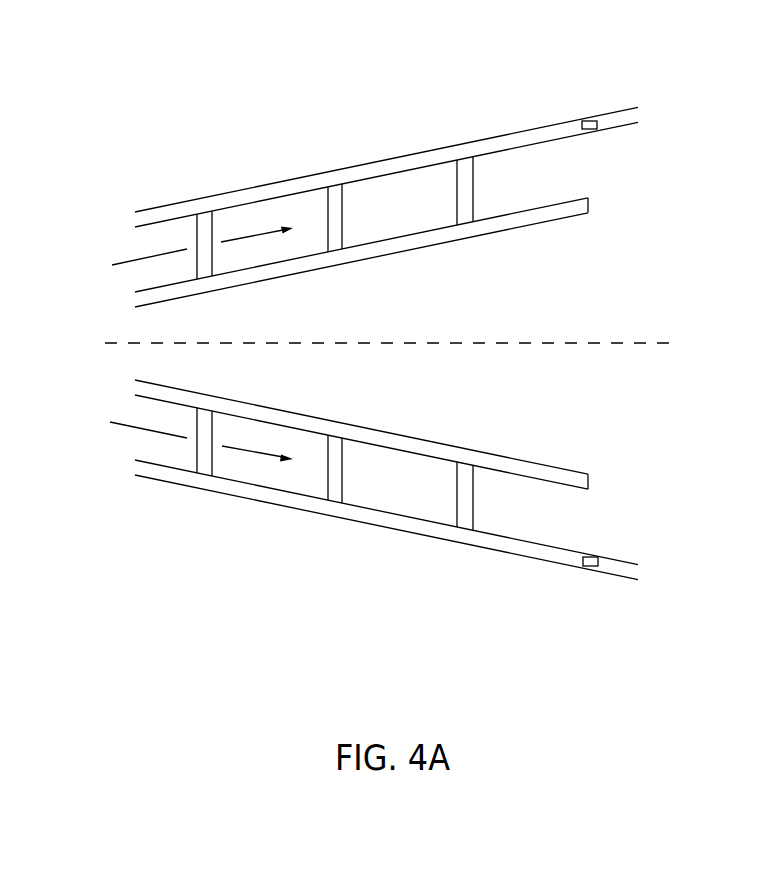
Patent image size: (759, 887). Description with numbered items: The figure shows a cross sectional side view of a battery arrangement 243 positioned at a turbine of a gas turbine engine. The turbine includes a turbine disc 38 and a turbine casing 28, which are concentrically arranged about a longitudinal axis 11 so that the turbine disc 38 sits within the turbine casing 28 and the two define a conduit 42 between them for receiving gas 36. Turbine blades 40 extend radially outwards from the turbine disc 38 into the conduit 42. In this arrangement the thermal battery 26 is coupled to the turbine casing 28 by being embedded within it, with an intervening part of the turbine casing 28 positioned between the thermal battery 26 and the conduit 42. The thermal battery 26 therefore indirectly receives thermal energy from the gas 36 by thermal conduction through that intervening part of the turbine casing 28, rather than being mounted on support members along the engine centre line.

The battery arrangement 243 is at (422, 86).
The turbine casing 28 is at (543, 133).
The thermal battery 26 is at (592, 120).
The gas 36 is at (123, 260).
The turbine disc 38 is at (588, 203).
The turbine blades 40 is at (200, 528).
The conduit 42 is at (389, 217).
The longitudinal axis 11 is at (645, 344).